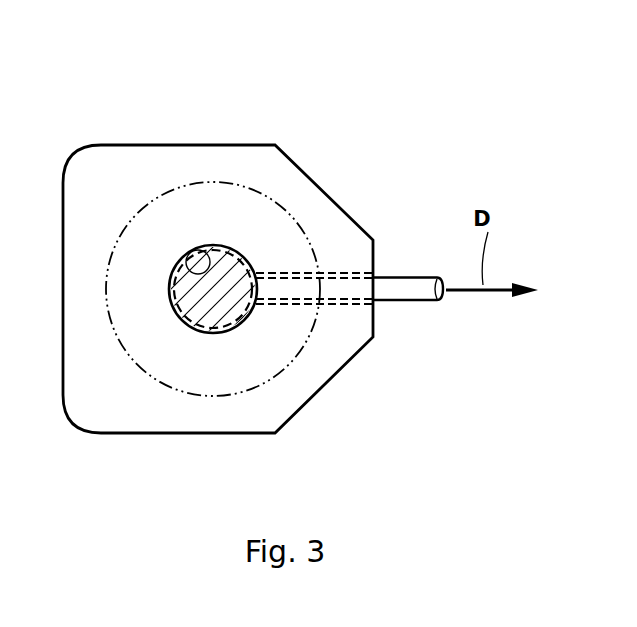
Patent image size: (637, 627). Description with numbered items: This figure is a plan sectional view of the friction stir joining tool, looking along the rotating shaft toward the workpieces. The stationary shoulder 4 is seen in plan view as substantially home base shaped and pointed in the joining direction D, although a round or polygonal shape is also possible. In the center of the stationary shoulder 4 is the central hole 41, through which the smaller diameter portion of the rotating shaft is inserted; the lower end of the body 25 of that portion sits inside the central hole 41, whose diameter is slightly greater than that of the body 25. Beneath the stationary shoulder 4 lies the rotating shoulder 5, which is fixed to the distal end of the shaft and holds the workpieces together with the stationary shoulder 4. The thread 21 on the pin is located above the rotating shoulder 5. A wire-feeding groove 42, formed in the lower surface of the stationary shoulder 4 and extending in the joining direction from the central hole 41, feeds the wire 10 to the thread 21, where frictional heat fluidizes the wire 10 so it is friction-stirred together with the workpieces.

The stationary shoulder 4 is at (257, 175).
The rotating shoulder 5 is at (160, 185).
The central hole 41 is at (206, 250).
The body 25 is at (216, 300).
The thread 21 is at (250, 327).
The wire-feeding groove 42 is at (347, 305).
The wire 10 is at (413, 292).